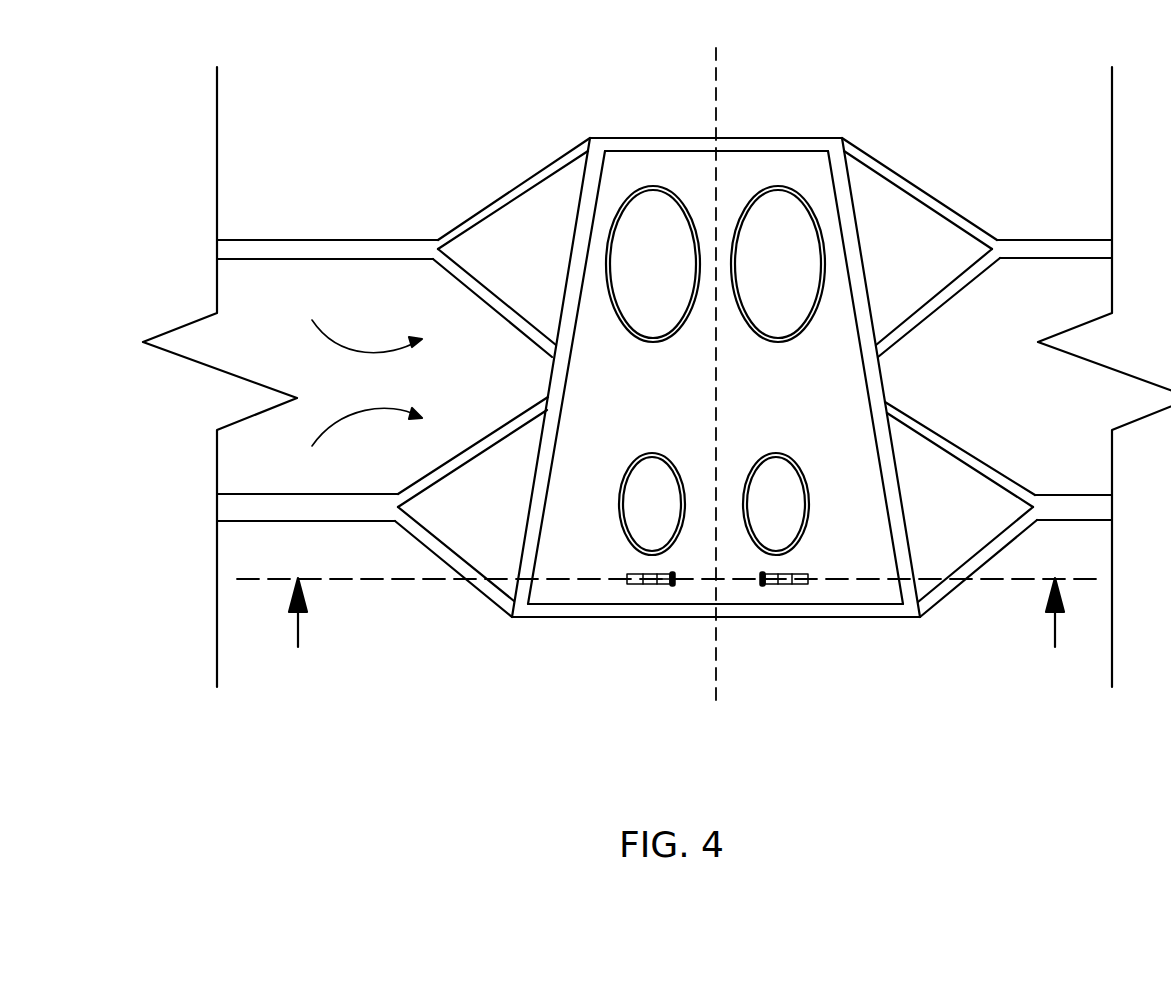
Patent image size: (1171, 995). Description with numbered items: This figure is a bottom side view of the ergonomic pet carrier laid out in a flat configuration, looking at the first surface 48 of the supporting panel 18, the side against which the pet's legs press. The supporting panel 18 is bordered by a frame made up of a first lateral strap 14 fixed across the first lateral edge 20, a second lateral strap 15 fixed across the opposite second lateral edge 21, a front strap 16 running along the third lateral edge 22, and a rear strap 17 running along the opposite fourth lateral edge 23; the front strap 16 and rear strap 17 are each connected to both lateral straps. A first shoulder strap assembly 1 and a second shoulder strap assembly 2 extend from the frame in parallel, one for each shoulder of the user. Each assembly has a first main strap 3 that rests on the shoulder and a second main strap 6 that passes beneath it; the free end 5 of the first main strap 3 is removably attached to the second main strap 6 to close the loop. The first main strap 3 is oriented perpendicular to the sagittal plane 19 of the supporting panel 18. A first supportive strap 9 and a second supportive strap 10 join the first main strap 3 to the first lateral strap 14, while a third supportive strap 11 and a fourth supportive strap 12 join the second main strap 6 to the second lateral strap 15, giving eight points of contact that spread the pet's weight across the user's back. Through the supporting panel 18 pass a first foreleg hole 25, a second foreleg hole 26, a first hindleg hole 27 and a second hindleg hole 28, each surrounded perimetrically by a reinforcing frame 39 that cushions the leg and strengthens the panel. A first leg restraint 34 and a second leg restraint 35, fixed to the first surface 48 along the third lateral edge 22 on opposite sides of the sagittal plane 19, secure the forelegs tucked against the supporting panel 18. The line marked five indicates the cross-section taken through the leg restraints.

The first shoulder strap assembly 1 is at (359, 440).
The second shoulder strap assembly 2 is at (360, 322).
The first main strap 3 is at (363, 247).
The free end of the first main strap 5 is at (668, 615).
The second main strap 6 is at (1077, 252).
The first supportive strap 9 is at (482, 287).
The second supportive strap 10 is at (525, 187).
The third supportive strap 11 is at (952, 290).
The fourth supportive strap 12 is at (903, 188).
The first lateral strap 14 is at (513, 612).
The second lateral strap 15 is at (917, 615).
The front strap 16 is at (807, 614).
The rear strap 17 is at (730, 147).
The supporting panel 18 is at (810, 164).
The sagittal plane 19 is at (715, 312).
The first lateral edge 20 is at (560, 355).
The second lateral edge 21 is at (862, 352).
The third lateral edge 22 is at (617, 604).
The fourth lateral edge 23 is at (617, 147).
The first foreleg hole 25 is at (680, 322).
The second foreleg hole 26 is at (809, 316).
The first hindleg hole 27 is at (626, 469).
The second hindleg hole 28 is at (753, 469).
The first leg restraint 34 is at (674, 597).
The second leg restraint 35 is at (759, 597).
The reinforcing frame 39 is at (696, 232).
The first surface 48 is at (648, 158).